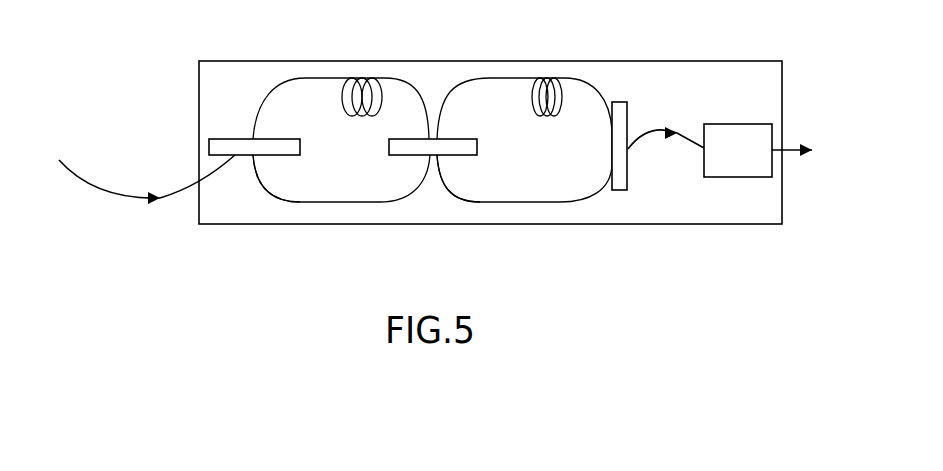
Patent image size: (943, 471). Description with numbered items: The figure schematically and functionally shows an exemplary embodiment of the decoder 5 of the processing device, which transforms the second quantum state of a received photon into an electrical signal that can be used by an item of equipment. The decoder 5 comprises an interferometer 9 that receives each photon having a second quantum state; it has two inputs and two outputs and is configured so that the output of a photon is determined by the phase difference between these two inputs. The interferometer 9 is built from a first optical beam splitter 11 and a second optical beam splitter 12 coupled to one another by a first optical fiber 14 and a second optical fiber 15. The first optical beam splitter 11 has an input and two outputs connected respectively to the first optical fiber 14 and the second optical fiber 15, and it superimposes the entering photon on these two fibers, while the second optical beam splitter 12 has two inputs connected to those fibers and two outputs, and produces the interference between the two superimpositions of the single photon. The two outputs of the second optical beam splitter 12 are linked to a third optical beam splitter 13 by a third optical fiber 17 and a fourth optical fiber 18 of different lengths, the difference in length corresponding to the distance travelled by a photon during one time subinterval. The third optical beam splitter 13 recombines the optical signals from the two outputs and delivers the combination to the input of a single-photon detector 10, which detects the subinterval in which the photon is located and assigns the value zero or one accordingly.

The decoder 5 is at (230, 61).
The interferometer 9 is at (271, 103).
The single-photon detector 10 is at (739, 124).
The first optical beam splitter 11 is at (210, 151).
The second optical beam splitter 12 is at (428, 136).
The third optical beam splitter 13 is at (620, 101).
The first optical fiber 14 is at (310, 78).
The second optical fiber 15 is at (268, 193).
The third optical fiber 17 is at (525, 78).
The fourth optical fiber 18 is at (455, 197).